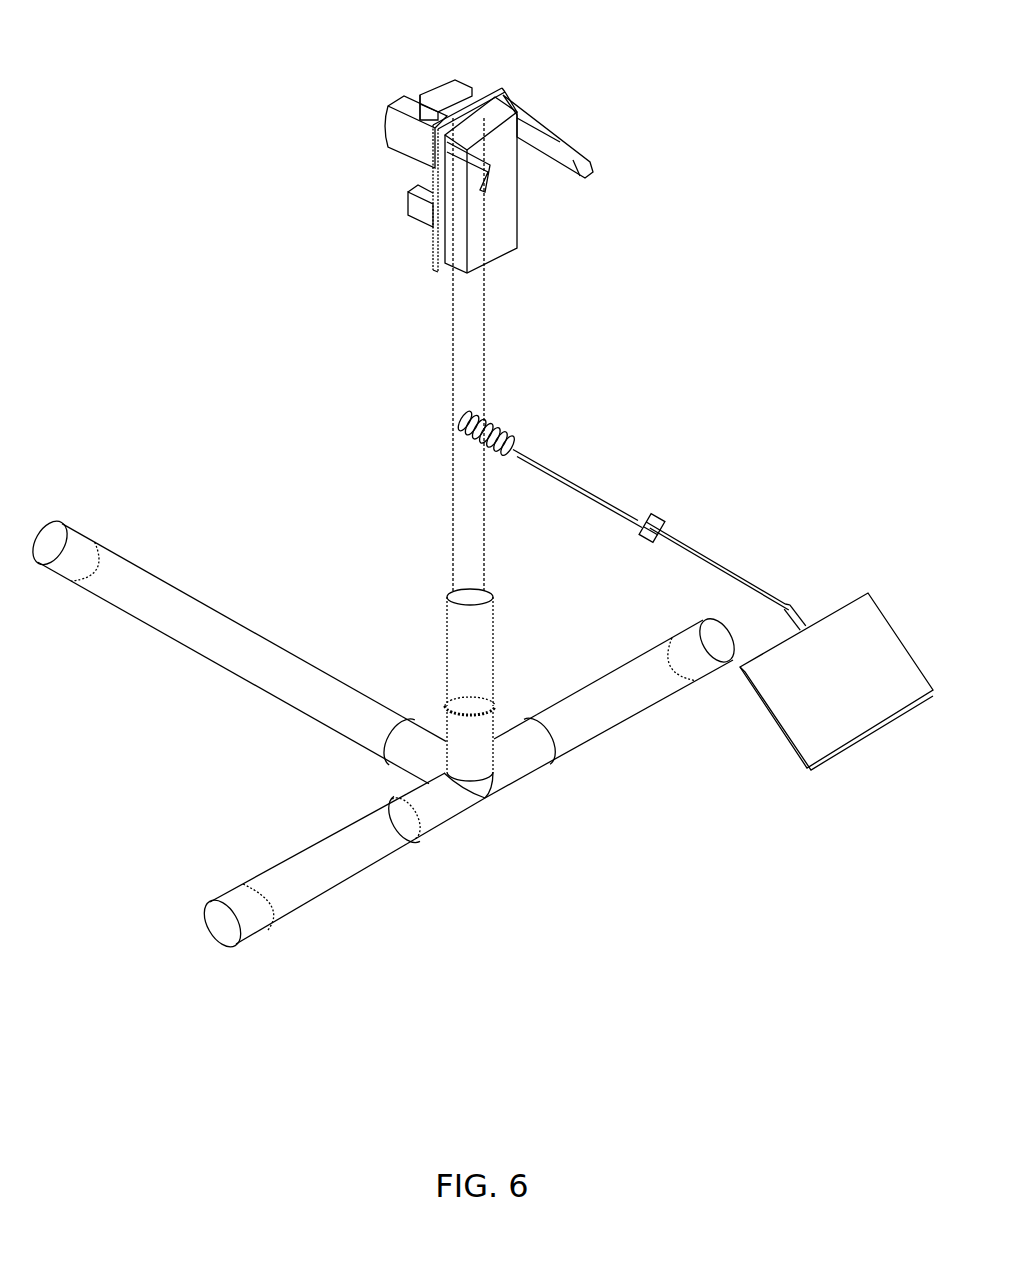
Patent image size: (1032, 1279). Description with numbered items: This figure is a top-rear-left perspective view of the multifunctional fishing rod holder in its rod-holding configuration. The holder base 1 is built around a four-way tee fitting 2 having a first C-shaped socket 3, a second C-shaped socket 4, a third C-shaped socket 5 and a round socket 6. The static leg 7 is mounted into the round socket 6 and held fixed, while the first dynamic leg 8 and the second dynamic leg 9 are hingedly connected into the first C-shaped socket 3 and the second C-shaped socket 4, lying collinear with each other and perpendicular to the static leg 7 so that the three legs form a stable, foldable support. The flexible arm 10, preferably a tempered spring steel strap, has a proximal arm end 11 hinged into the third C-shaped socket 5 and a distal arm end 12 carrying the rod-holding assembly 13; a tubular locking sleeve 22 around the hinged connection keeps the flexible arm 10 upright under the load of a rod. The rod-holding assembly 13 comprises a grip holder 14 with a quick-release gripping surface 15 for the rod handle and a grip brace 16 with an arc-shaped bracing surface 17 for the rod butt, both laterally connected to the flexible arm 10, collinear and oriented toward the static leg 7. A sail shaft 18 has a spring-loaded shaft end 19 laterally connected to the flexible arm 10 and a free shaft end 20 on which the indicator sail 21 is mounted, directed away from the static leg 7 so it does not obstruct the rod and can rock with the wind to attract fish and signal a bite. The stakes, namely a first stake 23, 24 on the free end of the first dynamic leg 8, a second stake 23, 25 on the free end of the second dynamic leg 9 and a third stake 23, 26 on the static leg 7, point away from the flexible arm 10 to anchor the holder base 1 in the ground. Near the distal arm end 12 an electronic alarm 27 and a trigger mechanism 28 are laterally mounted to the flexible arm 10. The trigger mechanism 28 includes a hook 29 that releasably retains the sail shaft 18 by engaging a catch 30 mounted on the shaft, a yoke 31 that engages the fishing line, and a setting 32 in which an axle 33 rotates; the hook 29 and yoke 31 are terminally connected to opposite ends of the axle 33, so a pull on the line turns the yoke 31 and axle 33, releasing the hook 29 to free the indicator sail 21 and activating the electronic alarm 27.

The holder base 1 is at (612, 912).
The 4-way tee fitting 2 is at (417, 708).
The first C-shaped socket 3 is at (540, 768).
The second C-shaped socket 4 is at (445, 805).
The third C-shaped socket 5 is at (490, 800).
The round socket 6 is at (395, 760).
The static leg 7 is at (215, 662).
The first dynamic leg 8 is at (605, 683).
The second dynamic leg 9 is at (310, 857).
The flexible arm 10 is at (456, 398).
The proximal arm end 11 is at (447, 712).
The distal arm end 12 is at (497, 88).
The rod-holding assembly 13 is at (318, 128).
The grip holder 14 is at (437, 85).
The gripping surface 15 is at (415, 105).
The grip brace 16 is at (408, 207).
The bracing surface 17 is at (433, 186).
The sail shaft 18 is at (700, 556).
The spring-loaded shaft end 19 is at (515, 443).
The free shaft end 20 is at (788, 607).
The indicator sail 21 is at (860, 602).
The locking sleeve 22 is at (470, 728).
The end cap coupling right 23, 24 is at (675, 727).
The end cap coupling left 23, 25 is at (263, 962).
The end cap coupling rear 23, 26 is at (87, 610).
The electronic alarm 27 is at (508, 248).
The trigger mechanism 28 is at (630, 110).
The hook 29 is at (485, 192).
The catch 30 is at (645, 532).
The yoke 31 is at (590, 178).
The setting 32 is at (519, 112).
The axle 33 is at (504, 102).